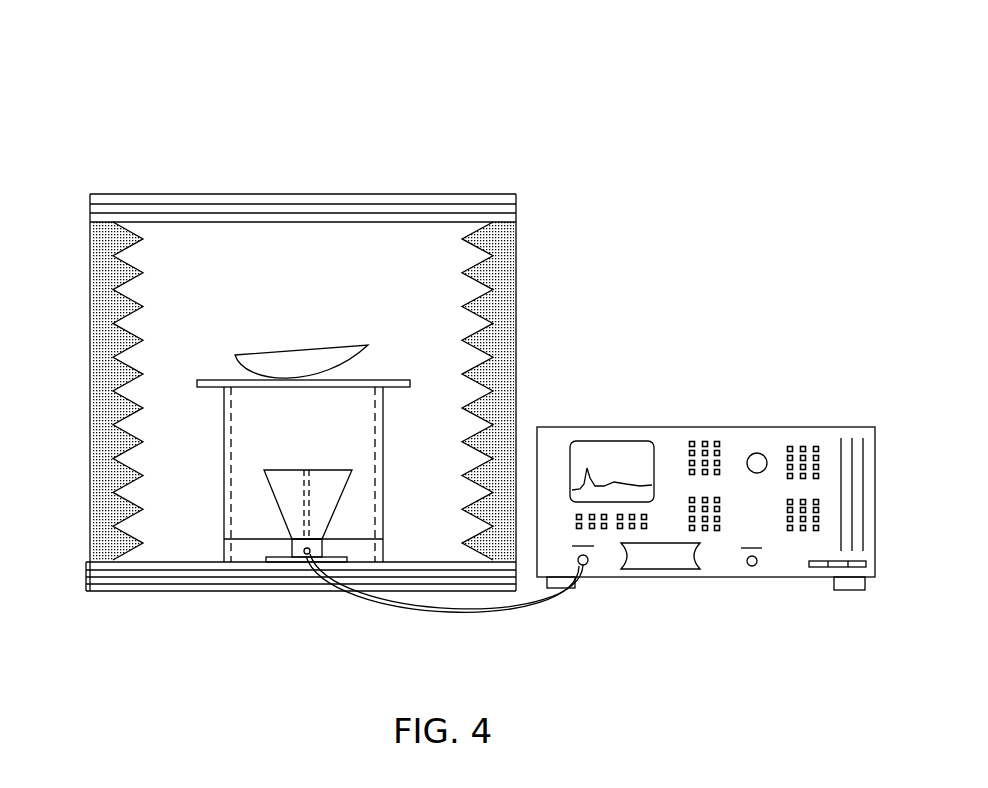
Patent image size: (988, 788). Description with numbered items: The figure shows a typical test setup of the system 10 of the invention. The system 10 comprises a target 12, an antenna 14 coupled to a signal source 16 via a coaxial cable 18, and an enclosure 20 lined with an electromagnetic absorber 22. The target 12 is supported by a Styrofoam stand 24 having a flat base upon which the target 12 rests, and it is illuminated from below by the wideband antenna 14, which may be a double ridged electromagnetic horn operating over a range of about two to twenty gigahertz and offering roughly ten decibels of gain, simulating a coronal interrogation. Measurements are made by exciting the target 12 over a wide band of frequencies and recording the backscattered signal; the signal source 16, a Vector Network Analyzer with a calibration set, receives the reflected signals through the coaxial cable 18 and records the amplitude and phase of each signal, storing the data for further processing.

The system 10 is at (685, 106).
The target 12 is at (302, 355).
The antenna 14 is at (296, 479).
The signal source 16 is at (735, 578).
The coaxial cable 18 is at (555, 603).
The enclosure 20 is at (90, 313).
The electromagnetic absorber 22 is at (156, 258).
The Styrofoam stand 24 is at (367, 505).